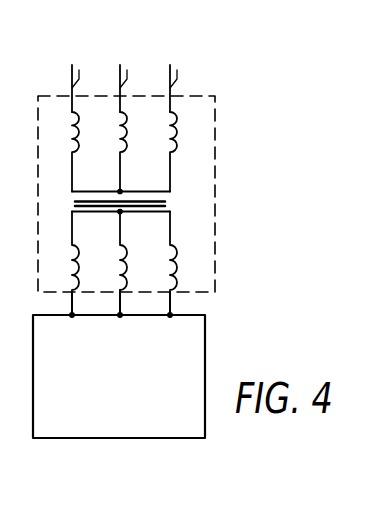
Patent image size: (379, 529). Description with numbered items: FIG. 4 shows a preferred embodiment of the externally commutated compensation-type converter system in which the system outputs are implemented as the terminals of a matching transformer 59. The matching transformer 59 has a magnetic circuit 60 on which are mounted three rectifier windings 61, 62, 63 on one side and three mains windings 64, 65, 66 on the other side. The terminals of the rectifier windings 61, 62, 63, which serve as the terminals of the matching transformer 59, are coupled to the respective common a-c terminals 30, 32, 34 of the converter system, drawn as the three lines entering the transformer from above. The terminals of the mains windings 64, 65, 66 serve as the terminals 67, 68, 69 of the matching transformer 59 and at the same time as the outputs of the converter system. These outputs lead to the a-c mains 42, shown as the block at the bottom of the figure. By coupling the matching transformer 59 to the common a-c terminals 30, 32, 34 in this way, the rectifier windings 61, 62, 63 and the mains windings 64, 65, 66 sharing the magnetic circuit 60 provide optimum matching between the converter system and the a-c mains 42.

The a-c terminal 30 is at (80, 71).
The a-c terminal 32 is at (135, 71).
The a-c terminal 34 is at (185, 71).
The matching transformer 59 is at (220, 228).
The magnetic circuit 60 is at (165, 202).
The rectifier winding 61 is at (73, 155).
The rectifier winding 62 is at (121, 155).
The rectifier winding 63 is at (171, 155).
The mains winding 64 is at (75, 266).
The mains winding 65 is at (123, 266).
The mains winding 66 is at (176, 272).
The terminal 67 is at (70, 302).
The terminal 68 is at (122, 293).
The terminal 69 is at (172, 300).
The a-c mains 42 is at (119, 376).